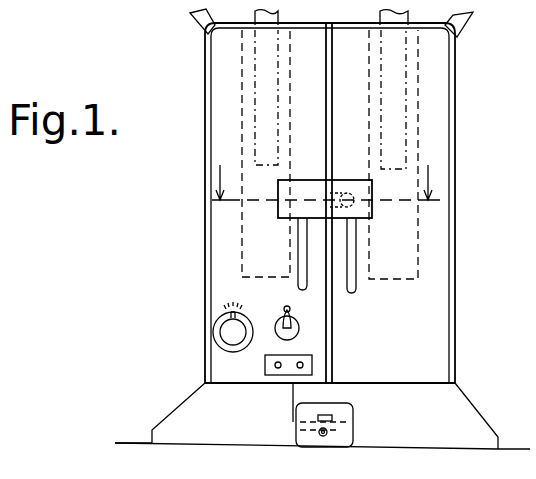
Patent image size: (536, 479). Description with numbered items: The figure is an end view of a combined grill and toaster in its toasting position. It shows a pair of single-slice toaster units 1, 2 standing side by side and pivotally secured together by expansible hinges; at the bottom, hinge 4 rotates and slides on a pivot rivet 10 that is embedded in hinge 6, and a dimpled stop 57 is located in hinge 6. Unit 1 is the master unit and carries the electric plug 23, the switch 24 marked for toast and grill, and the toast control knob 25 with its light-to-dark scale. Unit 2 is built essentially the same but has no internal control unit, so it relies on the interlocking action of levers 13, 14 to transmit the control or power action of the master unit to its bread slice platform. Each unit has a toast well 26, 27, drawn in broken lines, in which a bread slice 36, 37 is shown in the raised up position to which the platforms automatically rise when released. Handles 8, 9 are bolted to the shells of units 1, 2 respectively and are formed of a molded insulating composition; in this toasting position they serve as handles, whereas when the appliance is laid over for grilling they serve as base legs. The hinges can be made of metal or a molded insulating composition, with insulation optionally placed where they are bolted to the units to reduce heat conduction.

The toaster unit 1 is at (203, 110).
The toaster unit 2 is at (463, 120).
The expansible hinge 4 is at (200, 410).
The expansible hinge 6 is at (462, 418).
The handle 8 is at (202, 25).
The handle 9 is at (470, 20).
The pivot rivet 10 is at (366, 438).
The lever 13 is at (307, 185).
The lever 14 is at (357, 184).
The electric plug 23 is at (265, 366).
The switch 24 is at (293, 328).
The toast control knob 25 is at (213, 332).
The toast well 26 is at (258, 221).
The toast well 27 is at (404, 243).
The bread slice 36 is at (278, 15).
The bread slice 37 is at (380, 15).
The dimpled stop 57 is at (333, 418).